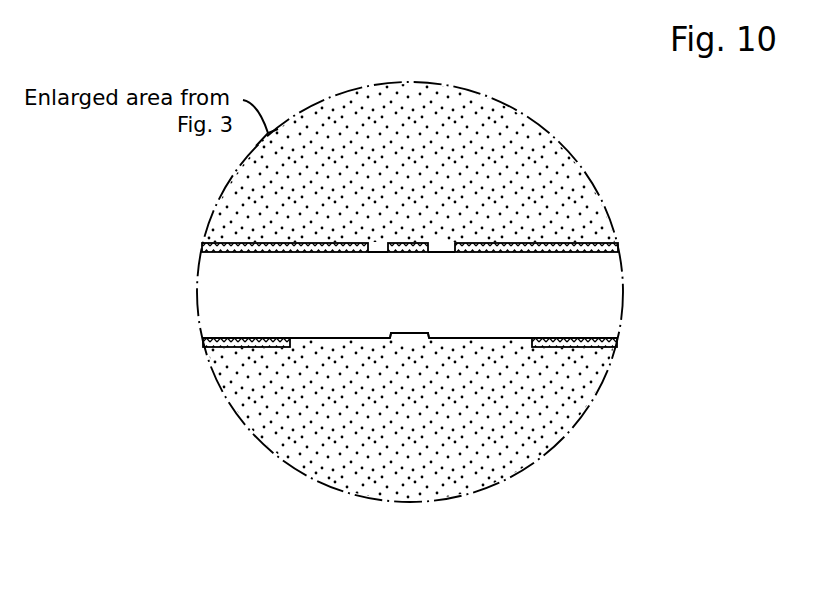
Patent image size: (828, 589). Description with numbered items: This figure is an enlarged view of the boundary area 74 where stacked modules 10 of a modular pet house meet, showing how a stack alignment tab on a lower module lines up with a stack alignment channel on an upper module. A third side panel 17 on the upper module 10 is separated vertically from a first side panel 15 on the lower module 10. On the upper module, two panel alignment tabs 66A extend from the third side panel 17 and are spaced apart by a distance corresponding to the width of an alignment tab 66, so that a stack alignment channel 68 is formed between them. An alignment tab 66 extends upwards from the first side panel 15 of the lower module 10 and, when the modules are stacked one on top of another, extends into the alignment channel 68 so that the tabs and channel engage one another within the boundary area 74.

The module 10 is at (338, 453).
The boundary area 74 is at (338, 155).
The third side panel 17 is at (583, 191).
The first side panel 15 is at (587, 397).
The alignment tab 66 is at (408, 334).
The panel alignment tabs 66A is at (383, 243).
The alignment channel 68 is at (415, 243).